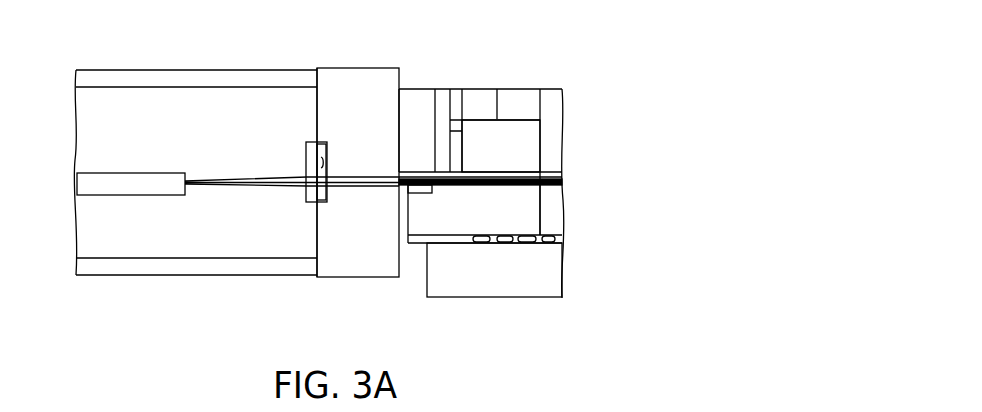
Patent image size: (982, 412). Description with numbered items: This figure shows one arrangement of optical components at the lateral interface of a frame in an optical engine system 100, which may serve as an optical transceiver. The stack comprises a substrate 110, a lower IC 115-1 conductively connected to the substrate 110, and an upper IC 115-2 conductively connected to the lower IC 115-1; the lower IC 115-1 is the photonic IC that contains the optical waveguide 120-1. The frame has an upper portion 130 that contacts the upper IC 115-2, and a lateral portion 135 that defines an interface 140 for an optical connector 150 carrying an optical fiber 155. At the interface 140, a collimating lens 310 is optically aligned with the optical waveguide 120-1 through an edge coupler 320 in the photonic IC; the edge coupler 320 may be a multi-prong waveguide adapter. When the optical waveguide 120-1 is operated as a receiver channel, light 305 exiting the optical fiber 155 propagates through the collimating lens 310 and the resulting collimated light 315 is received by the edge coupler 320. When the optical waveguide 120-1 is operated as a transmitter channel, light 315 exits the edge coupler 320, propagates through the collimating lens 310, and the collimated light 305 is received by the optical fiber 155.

The optical engine system 100 is at (569, 42).
The substrate 110 is at (542, 274).
The lower IC 115-1 is at (522, 217).
The upper IC 115-2 is at (514, 144).
The optical waveguide 120-1 is at (453, 188).
The upper portion 130 is at (424, 116).
The lateral portion 135 is at (378, 98).
The interface 140 is at (319, 67).
The optical connector 150 is at (200, 73).
The optical fiber 155 is at (146, 172).
The light 305 is at (277, 189).
The collimating lens 310 is at (323, 197).
The collimated light 315 is at (357, 187).
The edge coupler 320 is at (424, 196).